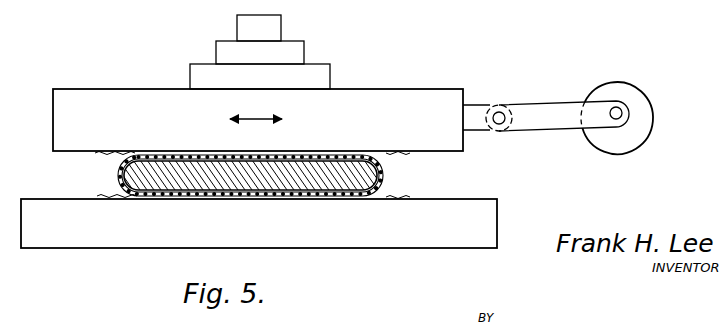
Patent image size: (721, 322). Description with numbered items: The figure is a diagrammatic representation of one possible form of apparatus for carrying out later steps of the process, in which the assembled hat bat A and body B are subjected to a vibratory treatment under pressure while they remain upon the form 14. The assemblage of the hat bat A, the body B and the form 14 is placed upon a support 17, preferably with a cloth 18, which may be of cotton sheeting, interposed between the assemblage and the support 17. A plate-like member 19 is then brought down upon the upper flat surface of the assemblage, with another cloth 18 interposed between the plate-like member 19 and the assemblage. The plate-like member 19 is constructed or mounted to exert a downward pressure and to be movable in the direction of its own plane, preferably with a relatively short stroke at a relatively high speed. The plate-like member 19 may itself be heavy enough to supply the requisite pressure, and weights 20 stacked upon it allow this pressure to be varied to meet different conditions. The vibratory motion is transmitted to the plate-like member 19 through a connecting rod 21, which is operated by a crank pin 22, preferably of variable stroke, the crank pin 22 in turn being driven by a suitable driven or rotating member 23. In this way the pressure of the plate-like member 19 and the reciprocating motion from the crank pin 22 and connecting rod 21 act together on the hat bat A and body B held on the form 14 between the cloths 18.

The form 14 is at (298, 178).
The support 17 is at (498, 209).
The cloth 18 is at (400, 193).
The plate-like member 19 is at (400, 89).
The weights 20 is at (331, 70).
The connecting rod 21 is at (535, 99).
The crank pin 22 is at (614, 108).
The rotating member 23 is at (647, 118).
The hat bat A is at (124, 172).
The body B is at (124, 180).